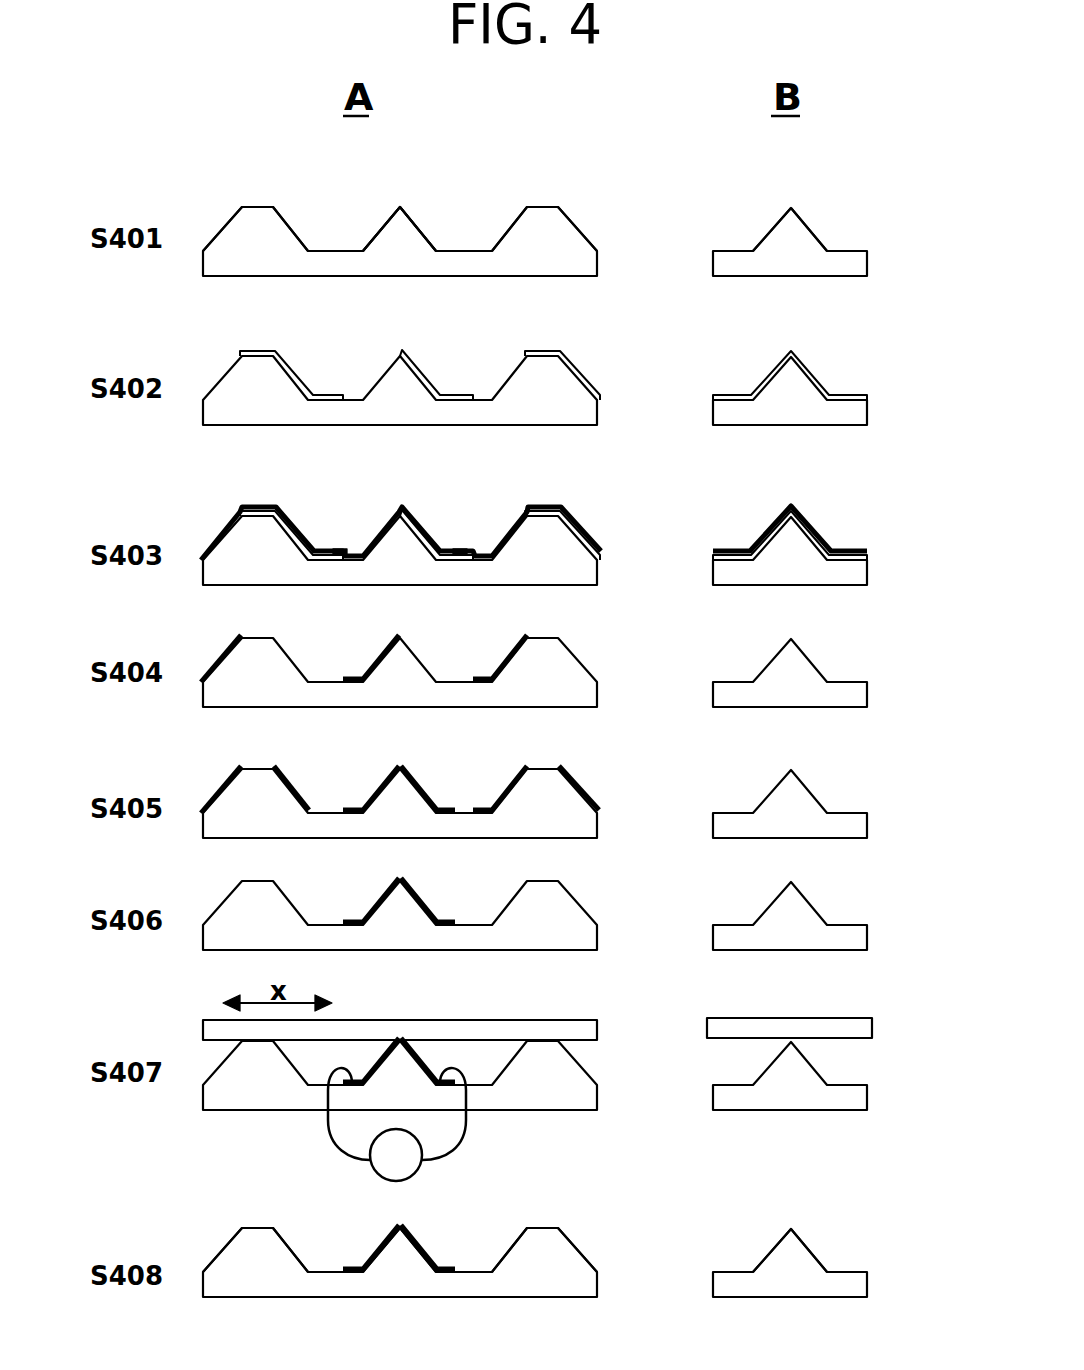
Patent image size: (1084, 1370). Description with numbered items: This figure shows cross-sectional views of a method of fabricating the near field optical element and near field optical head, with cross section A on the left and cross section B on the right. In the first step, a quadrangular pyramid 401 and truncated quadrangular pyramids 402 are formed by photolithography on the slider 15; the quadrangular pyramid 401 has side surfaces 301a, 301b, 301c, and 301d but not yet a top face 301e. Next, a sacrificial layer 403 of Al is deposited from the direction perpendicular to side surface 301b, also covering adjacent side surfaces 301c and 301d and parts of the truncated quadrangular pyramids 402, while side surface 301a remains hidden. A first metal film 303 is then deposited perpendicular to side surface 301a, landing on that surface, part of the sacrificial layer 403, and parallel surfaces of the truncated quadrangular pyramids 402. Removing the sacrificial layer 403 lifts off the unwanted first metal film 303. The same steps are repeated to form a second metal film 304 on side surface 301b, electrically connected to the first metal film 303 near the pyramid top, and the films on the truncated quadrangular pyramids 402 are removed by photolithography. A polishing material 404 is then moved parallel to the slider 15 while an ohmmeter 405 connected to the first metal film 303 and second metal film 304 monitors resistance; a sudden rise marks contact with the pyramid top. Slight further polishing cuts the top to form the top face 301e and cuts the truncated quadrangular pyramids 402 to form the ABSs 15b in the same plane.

The slider 15 is at (750, 265).
The ABS 15b is at (258, 1230).
The side surface 301a is at (385, 229).
The side surface 301b is at (420, 229).
The side surface 301c is at (772, 231).
The side surface 301d is at (813, 231).
The top face 301e is at (398, 1230).
The first metal film 303 is at (513, 527).
The second metal film 304 is at (290, 772).
The quadrangular pyramid 401 is at (400, 230).
The truncated quadrangular pyramid 402 is at (250, 230).
The sacrificial layer 403 is at (285, 360).
The polishing material 404 is at (580, 1023).
The ohmmeter 405 is at (420, 1163).